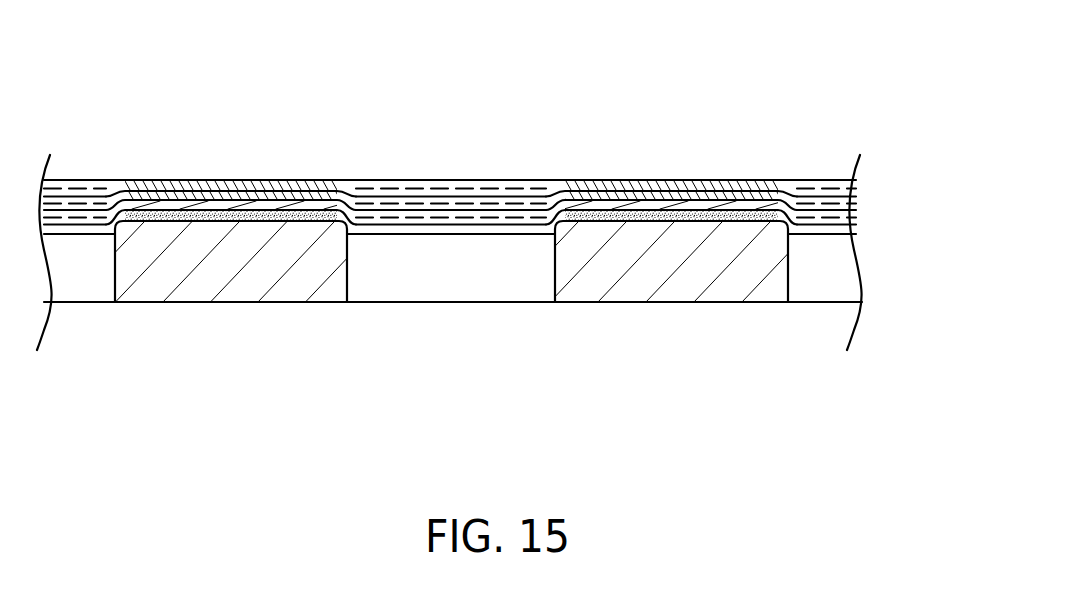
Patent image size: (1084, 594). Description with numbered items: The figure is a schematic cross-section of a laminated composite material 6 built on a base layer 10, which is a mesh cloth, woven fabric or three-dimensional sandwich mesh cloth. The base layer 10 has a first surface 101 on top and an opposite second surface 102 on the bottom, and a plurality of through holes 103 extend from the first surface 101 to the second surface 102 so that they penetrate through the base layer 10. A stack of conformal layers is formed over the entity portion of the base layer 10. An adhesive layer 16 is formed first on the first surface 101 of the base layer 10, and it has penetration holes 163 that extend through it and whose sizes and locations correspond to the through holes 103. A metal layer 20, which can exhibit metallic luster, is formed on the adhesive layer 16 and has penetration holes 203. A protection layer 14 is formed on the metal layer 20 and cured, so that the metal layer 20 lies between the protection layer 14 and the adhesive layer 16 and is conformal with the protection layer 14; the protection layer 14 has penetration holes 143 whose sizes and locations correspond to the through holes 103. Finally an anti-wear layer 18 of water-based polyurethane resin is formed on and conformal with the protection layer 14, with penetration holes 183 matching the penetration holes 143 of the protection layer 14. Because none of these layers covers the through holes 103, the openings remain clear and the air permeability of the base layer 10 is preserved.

The laminated composite material 6 is at (858, 103).
The base layer 10 is at (865, 220).
The first surface 101 is at (530, 222).
The second surface 102 is at (515, 302).
The through holes 103 is at (395, 282).
The protection layer 14 is at (642, 197).
The penetration holes 143 is at (473, 193).
The adhesive layer 16 is at (593, 213).
The penetration holes 163 is at (455, 226).
The anti-wear layer 18 is at (745, 185).
The penetration holes 183 is at (422, 185).
The metal layer 20 is at (687, 205).
The penetration holes 203 is at (370, 203).